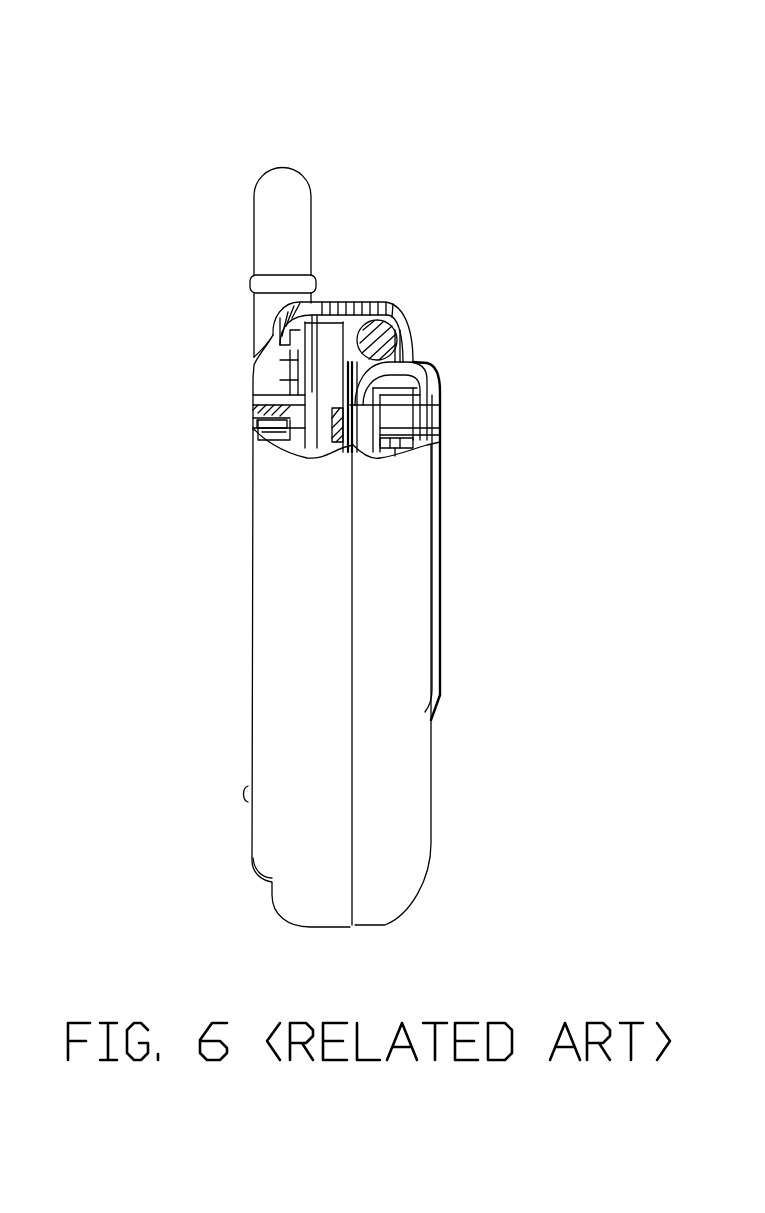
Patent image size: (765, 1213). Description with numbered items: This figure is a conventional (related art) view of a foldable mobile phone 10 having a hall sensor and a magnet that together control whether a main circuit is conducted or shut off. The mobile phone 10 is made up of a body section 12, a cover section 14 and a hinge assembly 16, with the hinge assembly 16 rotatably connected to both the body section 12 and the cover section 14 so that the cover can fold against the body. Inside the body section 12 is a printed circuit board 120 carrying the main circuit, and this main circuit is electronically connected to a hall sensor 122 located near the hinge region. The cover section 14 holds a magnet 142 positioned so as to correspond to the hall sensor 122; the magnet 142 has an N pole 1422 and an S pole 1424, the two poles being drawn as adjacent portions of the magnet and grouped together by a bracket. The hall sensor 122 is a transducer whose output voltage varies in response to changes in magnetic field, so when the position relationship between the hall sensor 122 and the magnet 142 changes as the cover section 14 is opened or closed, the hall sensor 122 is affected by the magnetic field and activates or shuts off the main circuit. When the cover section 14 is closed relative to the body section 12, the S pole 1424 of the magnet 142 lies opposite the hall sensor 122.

The mobile phone 10 is at (384, 41).
The body section 12 is at (217, 641).
The cover section 14 is at (450, 725).
The hinge assembly 16 is at (397, 325).
The printed circuit board 120 is at (290, 430).
The hall sensor 122 is at (332, 410).
The magnet 142 is at (555, 380).
The N pole 1422 is at (380, 385).
The S pole 1424 is at (367, 428).